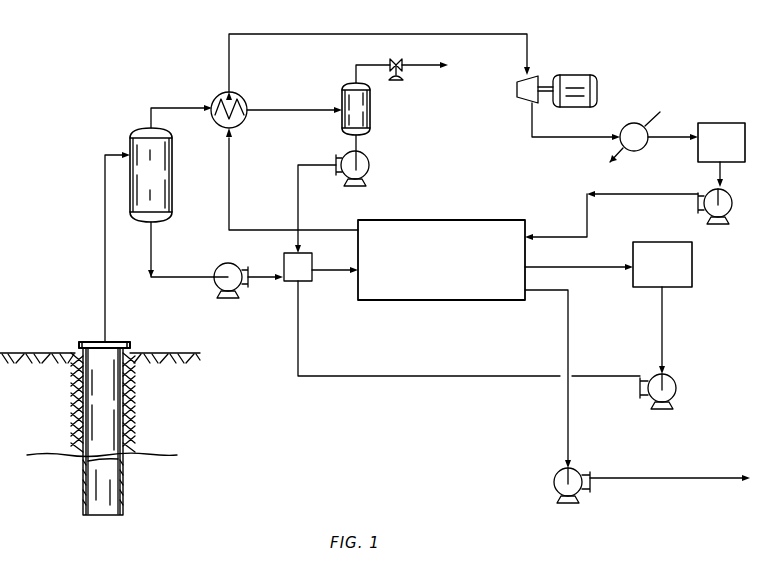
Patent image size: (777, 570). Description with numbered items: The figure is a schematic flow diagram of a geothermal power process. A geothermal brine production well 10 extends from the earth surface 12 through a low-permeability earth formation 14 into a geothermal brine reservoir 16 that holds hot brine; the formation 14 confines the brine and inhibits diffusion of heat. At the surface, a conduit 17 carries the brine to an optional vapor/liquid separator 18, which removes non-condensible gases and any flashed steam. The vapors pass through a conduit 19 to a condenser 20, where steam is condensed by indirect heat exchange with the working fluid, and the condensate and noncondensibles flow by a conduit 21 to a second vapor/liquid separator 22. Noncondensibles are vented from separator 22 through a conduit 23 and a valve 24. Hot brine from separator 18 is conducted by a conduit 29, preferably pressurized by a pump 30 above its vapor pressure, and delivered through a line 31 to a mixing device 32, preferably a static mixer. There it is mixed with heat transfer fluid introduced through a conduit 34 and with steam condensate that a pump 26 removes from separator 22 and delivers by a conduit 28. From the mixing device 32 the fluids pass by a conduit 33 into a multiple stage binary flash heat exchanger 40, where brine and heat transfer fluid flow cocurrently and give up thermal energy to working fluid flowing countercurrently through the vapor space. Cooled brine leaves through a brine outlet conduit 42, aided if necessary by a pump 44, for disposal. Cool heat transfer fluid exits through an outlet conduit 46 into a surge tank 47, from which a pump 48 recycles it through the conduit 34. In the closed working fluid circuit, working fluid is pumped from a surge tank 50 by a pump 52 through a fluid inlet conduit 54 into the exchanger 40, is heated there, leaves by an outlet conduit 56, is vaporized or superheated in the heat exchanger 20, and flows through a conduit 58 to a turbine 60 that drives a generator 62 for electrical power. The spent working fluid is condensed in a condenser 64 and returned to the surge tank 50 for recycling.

The geothermal brine production well 10 is at (123, 413).
The earth surface 12 is at (33, 353).
The earth formation 14 is at (46, 423).
The geothermal brine reservoir 16 is at (158, 498).
The conduit 17 is at (105, 268).
The vapor/liquid separator 18 is at (158, 176).
The conduit 19 is at (147, 108).
The condenser 20 is at (216, 101).
The conduit 21 is at (288, 100).
The second vapor/liquid separator 22 is at (370, 113).
The conduit 23 is at (350, 65).
The valve 24 is at (402, 84).
The pump 26 is at (369, 165).
The conduit 28 is at (298, 208).
The conduit 29 is at (150, 262).
The pump 30 is at (214, 284).
The line 31 is at (262, 281).
The mixing device 32 is at (312, 258).
The conduit 33 is at (323, 272).
The conduit 34 is at (340, 377).
The multiple stage binary flash heat exchanger 40 is at (443, 209).
The brine outlet conduit 42 is at (565, 428).
The pump 44 is at (555, 486).
The outlet conduit 46 is at (590, 270).
The surge tank 47 is at (692, 268).
The pump 48 is at (676, 390).
The surge tank 50 is at (720, 123).
The pump 52 is at (732, 207).
The fluid inlet conduit 54 is at (587, 233).
The outlet conduit 56 is at (231, 191).
The conduit 58 is at (327, 33).
The turbine 60 is at (517, 91).
The generator 62 is at (574, 80).
The condenser 64 is at (619, 146).